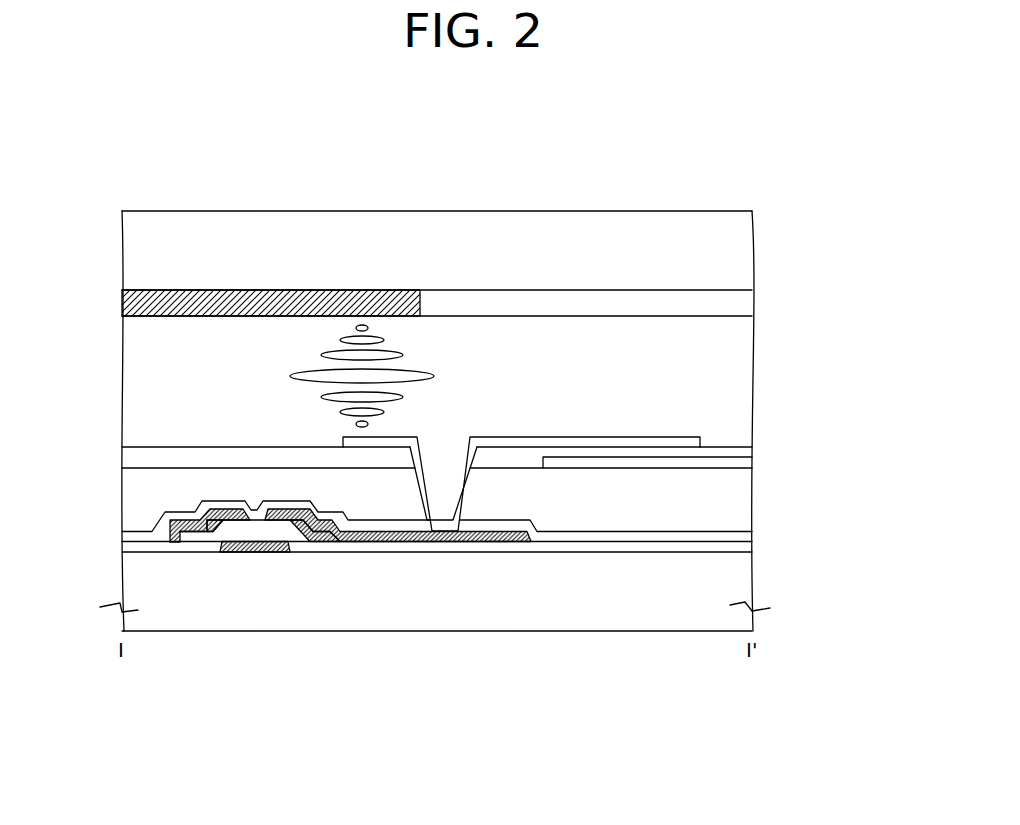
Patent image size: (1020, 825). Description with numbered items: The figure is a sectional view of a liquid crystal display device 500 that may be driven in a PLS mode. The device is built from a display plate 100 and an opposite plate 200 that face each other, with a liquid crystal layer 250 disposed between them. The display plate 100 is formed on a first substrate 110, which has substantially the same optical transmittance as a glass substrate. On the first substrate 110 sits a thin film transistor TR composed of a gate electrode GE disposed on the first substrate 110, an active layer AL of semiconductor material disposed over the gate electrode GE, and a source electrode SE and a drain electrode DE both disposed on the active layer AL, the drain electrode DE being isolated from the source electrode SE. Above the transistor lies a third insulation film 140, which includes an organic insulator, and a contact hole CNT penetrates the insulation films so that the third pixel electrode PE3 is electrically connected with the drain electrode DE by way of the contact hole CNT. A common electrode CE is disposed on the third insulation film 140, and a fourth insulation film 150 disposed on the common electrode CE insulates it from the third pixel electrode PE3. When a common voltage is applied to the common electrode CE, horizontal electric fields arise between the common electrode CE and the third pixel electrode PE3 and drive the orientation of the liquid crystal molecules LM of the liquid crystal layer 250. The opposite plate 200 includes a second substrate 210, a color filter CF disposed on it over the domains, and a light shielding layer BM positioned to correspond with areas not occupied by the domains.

The liquid crystal display device 500 is at (690, 167).
The opposite plate 200 is at (827, 237).
The second substrate 210 is at (748, 248).
The color filter CF is at (745, 300).
The light shielding layer BM is at (132, 299).
The liquid crystal layer 250 is at (748, 373).
The liquid crystal molecules LM is at (430, 373).
The display plate 100 is at (829, 422).
The third pixel electrode PE3 is at (688, 438).
The contact hole CNT is at (453, 434).
The fourth insulation film 150 is at (748, 450).
The common electrode CE is at (750, 465).
The third insulation film 140 is at (750, 497).
The first substrate 110 is at (747, 587).
The thin film transistor TR is at (403, 701).
The gate electrode GE is at (245, 553).
The active layer AL is at (308, 542).
The source electrode SE is at (183, 542).
The drain electrode DE is at (383, 542).